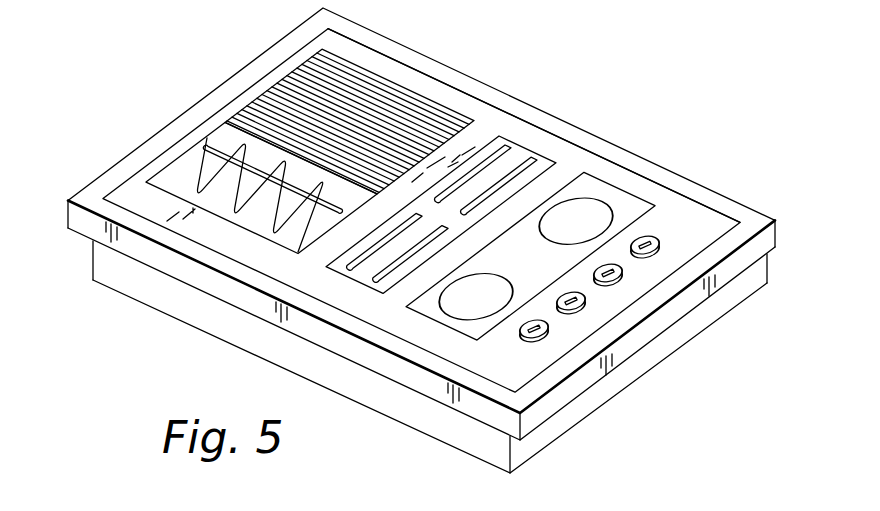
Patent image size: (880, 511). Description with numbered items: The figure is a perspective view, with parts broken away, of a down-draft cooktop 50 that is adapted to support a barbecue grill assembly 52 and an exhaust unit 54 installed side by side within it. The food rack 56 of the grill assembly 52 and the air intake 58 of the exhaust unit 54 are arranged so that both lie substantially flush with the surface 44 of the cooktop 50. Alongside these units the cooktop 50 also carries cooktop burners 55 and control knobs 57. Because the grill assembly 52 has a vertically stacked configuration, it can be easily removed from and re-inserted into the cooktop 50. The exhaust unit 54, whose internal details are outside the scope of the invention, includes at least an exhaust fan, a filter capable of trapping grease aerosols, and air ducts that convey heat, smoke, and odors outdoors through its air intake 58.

The down-draft cooktop 50 is at (651, 72).
The cooktop surface 44 is at (453, 102).
The barbecue grill assembly 52 is at (193, 165).
The exhaust unit 54 is at (451, 169).
The cooktop burners 55 is at (590, 214).
The food rack 56 is at (393, 95).
The control knobs 57 is at (548, 330).
The air intake 58 is at (517, 155).